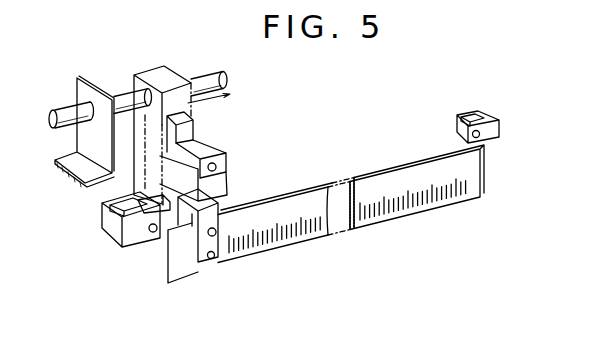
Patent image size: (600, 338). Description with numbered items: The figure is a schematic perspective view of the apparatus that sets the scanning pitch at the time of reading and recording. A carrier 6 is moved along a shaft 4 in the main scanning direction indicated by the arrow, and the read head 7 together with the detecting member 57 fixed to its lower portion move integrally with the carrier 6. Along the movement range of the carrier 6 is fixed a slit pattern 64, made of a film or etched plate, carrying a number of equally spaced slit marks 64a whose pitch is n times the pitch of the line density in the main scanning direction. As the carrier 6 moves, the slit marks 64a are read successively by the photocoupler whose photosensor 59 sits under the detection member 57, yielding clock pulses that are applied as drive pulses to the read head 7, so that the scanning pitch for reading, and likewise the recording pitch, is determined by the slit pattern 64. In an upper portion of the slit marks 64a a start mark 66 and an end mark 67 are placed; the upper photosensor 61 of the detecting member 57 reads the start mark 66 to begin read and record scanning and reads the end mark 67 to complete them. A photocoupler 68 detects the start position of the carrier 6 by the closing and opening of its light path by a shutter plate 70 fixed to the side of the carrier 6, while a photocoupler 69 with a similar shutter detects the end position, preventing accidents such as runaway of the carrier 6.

The shaft 4 is at (204, 75).
The carrier 6 is at (158, 67).
The read head 7 is at (214, 152).
The detecting member 57 is at (196, 268).
The photosensor 59 is at (215, 259).
The photosensor 61 is at (194, 238).
The slit pattern 64 is at (351, 191).
The slit marks 64a is at (381, 191).
The start mark 66 is at (243, 238).
The end mark 67 is at (440, 183).
The photocoupler 68 is at (113, 235).
The photocoupler 69 is at (488, 138).
The shutter plate 70 is at (160, 205).